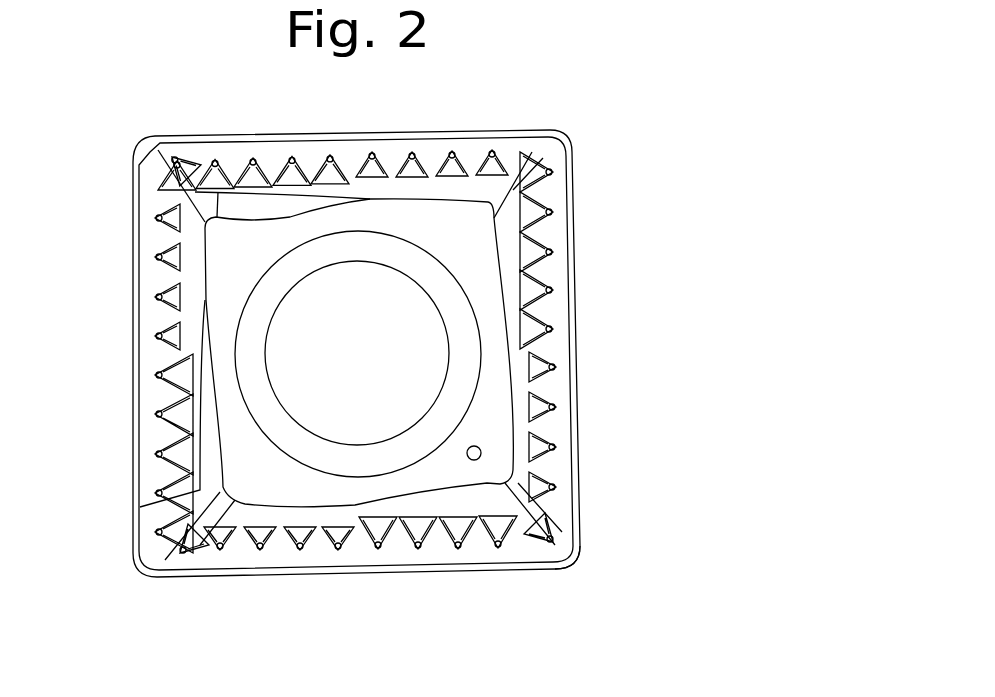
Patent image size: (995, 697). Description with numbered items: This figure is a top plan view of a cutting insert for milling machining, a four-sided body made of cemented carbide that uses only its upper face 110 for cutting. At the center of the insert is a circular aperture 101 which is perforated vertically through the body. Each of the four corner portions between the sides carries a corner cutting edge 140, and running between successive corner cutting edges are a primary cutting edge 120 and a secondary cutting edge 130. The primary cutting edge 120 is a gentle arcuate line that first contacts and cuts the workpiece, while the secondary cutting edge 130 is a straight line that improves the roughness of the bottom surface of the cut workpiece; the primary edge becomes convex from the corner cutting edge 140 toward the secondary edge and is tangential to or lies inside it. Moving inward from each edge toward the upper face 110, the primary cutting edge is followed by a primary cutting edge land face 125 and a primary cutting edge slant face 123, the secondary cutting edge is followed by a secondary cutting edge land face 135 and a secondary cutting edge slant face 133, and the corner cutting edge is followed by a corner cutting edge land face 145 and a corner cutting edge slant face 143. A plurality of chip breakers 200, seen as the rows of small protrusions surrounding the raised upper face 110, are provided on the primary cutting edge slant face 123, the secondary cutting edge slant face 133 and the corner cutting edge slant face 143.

The circular aperture 101 is at (442, 335).
The upper face 110 is at (226, 303).
The primary cutting edge 120 is at (300, 573).
The primary cutting edge slant face 123 is at (318, 560).
The primary cutting edge land face 125 is at (257, 572).
The secondary cutting edge 130 is at (515, 570).
The secondary cutting edge slant face 133 is at (500, 568).
The secondary cutting edge land face 135 is at (540, 565).
The corner cutting edge 140 is at (577, 562).
The corner cutting edge slant face 143 is at (562, 546).
The corner cutting edge land face 145 is at (563, 570).
The chip breakers 200 is at (160, 411).